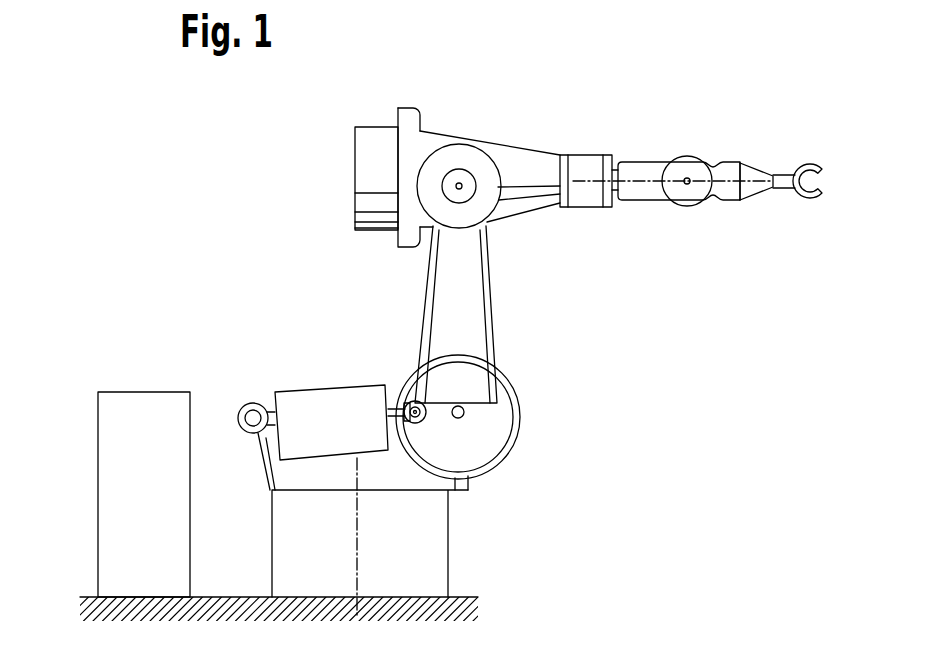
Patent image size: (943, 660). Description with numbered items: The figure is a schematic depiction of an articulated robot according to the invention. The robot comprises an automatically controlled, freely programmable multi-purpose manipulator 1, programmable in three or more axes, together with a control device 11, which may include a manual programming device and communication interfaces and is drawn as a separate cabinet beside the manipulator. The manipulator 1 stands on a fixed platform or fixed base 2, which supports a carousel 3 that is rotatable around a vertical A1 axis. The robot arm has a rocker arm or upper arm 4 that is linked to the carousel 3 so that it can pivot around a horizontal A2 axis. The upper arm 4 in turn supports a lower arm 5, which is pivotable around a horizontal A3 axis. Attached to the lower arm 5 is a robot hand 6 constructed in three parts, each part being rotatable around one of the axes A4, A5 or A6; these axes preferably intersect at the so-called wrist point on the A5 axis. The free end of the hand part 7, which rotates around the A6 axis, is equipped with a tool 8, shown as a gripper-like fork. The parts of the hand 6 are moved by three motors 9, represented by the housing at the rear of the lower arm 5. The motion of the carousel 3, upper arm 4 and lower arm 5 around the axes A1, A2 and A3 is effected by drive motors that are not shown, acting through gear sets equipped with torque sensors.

The multi-purpose manipulator 1 is at (617, 282).
The fixed base 2 is at (430, 553).
The carousel 3 is at (453, 485).
The upper arm 4 is at (477, 340).
The lower arm 5 is at (523, 160).
The robot hand 6 is at (698, 212).
The hand part 7 is at (757, 190).
The tool 8 is at (790, 170).
The motors 9 is at (372, 152).
The control device 11 is at (115, 454).
The A1 axis A1 is at (357, 567).
The A2 axis A2 is at (462, 418).
The A3 axis A3 is at (459, 183).
The A4 axis A4 is at (592, 178).
The A5 axis A5 is at (687, 177).
The A6 axis A6 is at (735, 177).